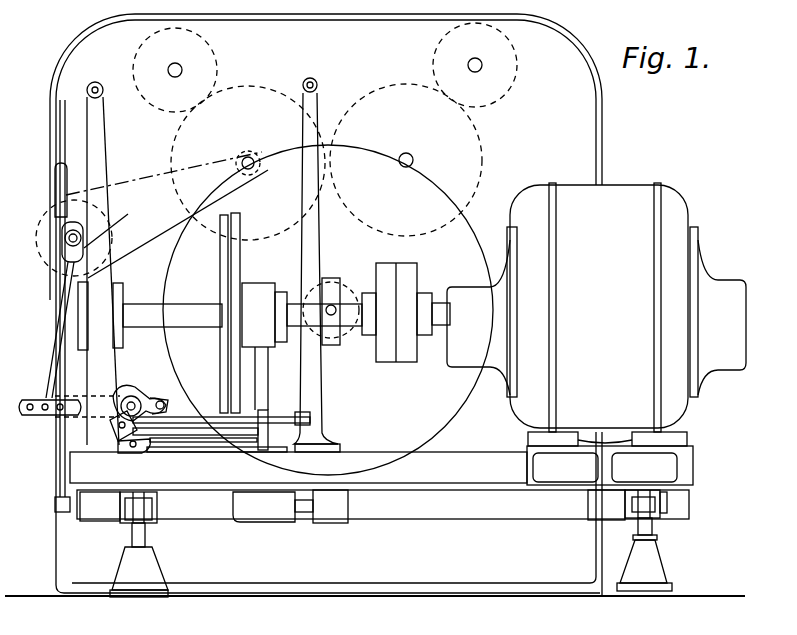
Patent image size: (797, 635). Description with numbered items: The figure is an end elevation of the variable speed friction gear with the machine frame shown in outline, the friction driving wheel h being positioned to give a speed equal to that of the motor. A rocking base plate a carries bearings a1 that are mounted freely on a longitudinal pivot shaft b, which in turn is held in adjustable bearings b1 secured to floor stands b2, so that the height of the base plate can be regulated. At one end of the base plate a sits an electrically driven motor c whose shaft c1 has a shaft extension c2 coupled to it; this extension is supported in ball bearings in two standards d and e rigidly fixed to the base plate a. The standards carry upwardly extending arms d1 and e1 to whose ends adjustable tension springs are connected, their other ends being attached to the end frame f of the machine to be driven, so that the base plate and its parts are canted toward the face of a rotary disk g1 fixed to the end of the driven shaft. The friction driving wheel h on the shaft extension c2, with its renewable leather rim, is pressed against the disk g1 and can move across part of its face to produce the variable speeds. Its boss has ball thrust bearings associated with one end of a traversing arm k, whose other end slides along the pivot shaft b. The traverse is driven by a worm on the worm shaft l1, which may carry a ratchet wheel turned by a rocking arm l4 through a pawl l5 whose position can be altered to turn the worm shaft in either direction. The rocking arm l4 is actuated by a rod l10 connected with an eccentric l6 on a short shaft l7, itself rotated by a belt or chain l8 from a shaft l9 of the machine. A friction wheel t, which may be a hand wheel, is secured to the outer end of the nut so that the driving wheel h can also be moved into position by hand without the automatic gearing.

The end frame f is at (316, 70).
The rotary disk g1 is at (338, 237).
The shaft of the machine l9 is at (254, 170).
The belt or chain l8 is at (164, 173).
The short shaft l7 is at (92, 232).
The eccentric l6 is at (112, 252).
The friction wheel t is at (58, 473).
The rocking arm l4 is at (63, 176).
The rod l10 is at (56, 366).
The worm shaft l1 is at (60, 312).
The pawl l5 is at (165, 400).
The standard e is at (112, 364).
The upwardly extending arm e1 is at (98, 120).
The shaft extension c2 is at (186, 310).
The friction driving wheel h is at (234, 262).
The traversing arm k is at (262, 380).
The standard d is at (324, 383).
The upwardly extending arm d1 is at (316, 96).
The motor shaft c1 is at (442, 300).
The electrically driven motor c is at (596, 334).
The rocking base plate a is at (298, 466).
The bearings a1 is at (96, 522).
The longitudinal pivot shaft b is at (494, 522).
The adjustable bearings b1 is at (160, 512).
The floor stands b2 is at (156, 570).